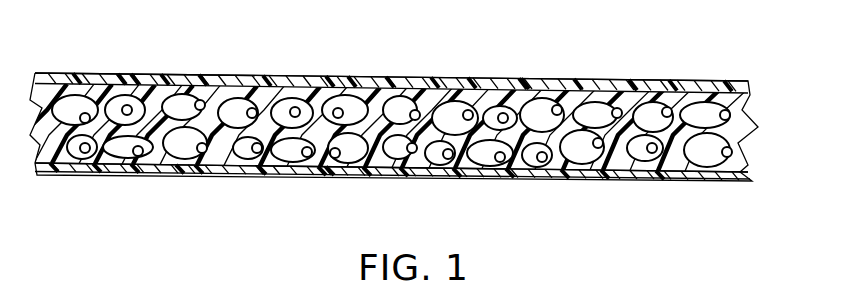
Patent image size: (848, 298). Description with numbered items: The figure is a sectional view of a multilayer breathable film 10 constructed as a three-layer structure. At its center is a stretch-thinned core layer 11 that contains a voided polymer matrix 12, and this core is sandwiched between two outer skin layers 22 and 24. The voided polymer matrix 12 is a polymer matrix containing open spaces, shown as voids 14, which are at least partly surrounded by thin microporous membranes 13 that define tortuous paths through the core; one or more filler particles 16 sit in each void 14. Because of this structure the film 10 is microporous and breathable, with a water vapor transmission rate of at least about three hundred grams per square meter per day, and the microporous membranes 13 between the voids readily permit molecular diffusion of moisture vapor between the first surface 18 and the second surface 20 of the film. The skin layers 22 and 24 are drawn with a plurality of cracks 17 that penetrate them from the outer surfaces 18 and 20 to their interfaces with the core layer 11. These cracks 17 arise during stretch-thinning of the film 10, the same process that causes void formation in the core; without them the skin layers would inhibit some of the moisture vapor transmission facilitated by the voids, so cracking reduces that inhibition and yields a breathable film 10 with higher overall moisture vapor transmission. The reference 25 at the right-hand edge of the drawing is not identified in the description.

The multilayer breathable film 10 is at (747, 166).
The stretch-thinned core layer 11 is at (752, 128).
The voided polymer matrix 12 is at (697, 100).
The microporous membranes 13 is at (393, 110).
The voids 14 is at (477, 160).
The filler particles 16 is at (510, 173).
The cracks 17 is at (135, 78).
The first surface 18 is at (77, 73).
The second surface 20 is at (107, 173).
The outer skin layer 22 is at (217, 78).
The outer skin layer 24 is at (230, 173).
The panel edge 25 is at (750, 88).